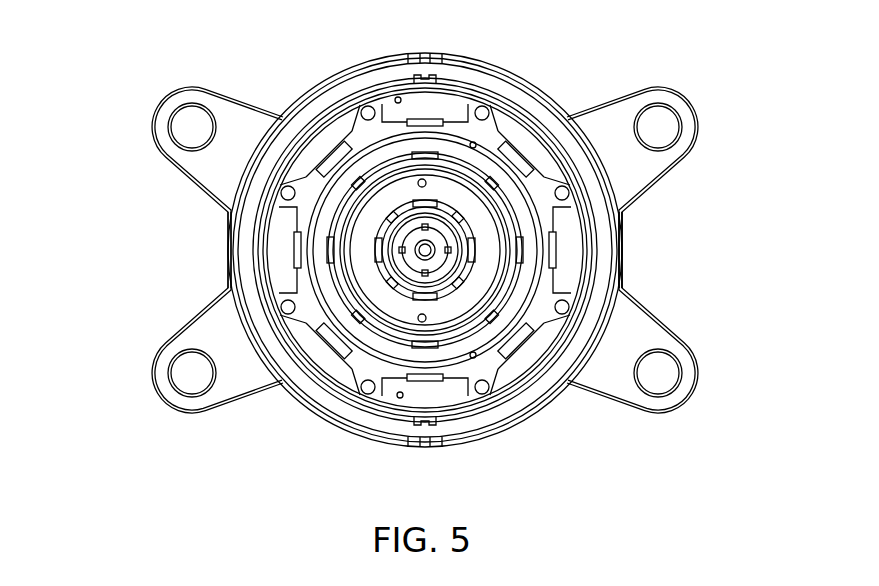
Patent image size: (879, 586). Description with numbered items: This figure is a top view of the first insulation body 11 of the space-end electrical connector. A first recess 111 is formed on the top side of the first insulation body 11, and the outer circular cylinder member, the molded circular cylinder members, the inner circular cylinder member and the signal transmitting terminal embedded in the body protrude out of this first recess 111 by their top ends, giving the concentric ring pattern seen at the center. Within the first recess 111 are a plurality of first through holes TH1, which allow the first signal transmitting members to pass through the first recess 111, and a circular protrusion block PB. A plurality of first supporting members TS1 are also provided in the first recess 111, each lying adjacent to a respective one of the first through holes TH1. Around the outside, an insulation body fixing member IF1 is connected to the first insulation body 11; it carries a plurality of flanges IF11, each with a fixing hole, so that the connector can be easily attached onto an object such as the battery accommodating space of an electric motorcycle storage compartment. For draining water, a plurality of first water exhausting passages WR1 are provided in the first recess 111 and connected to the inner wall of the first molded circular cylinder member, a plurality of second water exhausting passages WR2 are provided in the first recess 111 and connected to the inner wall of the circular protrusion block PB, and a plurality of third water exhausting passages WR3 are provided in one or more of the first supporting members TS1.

The first insulation body 11 is at (125, 148).
The first recess 111 is at (372, 137).
The first supporting members TS1 is at (272, 217).
The circular protrusion block PB is at (420, 142).
The first water exhausting passages WR1 is at (420, 182).
The second water exhausting passages WR2 is at (474, 353).
The third water exhausting passages WR3 is at (398, 397).
The insulation body fixing member IF1 is at (630, 282).
The flanges IF11 is at (633, 186).
The first through holes TH1 is at (513, 343).